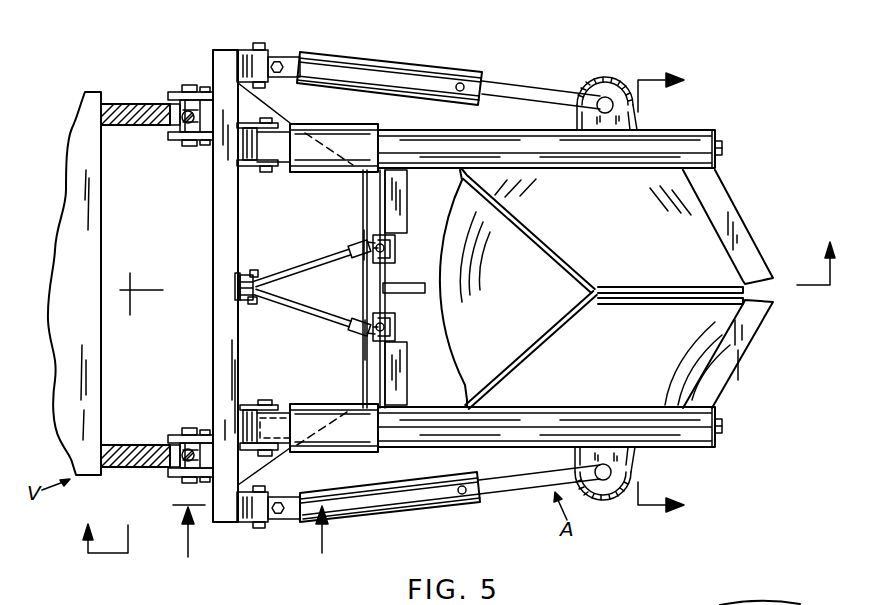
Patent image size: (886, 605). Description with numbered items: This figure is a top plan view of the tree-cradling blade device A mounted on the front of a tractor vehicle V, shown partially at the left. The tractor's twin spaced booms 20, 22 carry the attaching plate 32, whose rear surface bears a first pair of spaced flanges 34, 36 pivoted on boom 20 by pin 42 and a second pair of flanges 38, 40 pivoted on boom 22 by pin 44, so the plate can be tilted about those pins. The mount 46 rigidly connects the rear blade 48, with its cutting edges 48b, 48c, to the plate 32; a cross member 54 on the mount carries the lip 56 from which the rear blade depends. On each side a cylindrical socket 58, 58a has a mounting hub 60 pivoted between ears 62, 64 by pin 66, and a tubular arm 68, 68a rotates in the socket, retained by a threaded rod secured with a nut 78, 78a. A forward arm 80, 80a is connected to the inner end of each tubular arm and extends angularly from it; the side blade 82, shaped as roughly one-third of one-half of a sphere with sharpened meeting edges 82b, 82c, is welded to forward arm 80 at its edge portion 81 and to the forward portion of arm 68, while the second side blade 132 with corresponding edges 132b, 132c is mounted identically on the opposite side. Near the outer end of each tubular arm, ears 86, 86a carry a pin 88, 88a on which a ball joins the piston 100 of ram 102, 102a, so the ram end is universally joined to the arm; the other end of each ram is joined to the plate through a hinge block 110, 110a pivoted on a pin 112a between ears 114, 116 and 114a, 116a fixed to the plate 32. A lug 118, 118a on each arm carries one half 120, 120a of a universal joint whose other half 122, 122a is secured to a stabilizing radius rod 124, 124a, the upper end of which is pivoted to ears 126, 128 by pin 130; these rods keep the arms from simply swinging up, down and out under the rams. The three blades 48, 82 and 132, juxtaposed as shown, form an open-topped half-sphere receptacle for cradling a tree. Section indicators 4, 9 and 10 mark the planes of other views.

The boom 20 is at (140, 450).
The boom 22 is at (126, 103).
The attaching plate 32 is at (228, 218).
The flange 34 is at (178, 472).
The flange 36 is at (190, 436).
The flange 38 is at (178, 141).
The flange 40 is at (181, 92).
The pin 42 is at (170, 463).
The pin 44 is at (168, 126).
The mount 46 is at (310, 446).
The rear blade segment 48 is at (451, 256).
The cutting edge 48b is at (528, 345).
The cutting edge 48c is at (556, 270).
The cross member 54 is at (370, 290).
The lip 56 is at (432, 336).
The first cylindrical socket 58 is at (371, 441).
The cylindrical socket 58a is at (335, 131).
The mounting hub 60 is at (280, 412).
The ear 62 is at (258, 458).
The ear 64 is at (248, 405).
The pin 66 is at (282, 429).
The tubular arm 68 is at (465, 441).
The tubular arm 68a is at (530, 127).
The nut 78 is at (713, 426).
The nut 78a is at (721, 156).
The forward arm 80 is at (734, 355).
The forward arm 80a is at (740, 237).
The edge portion 81 is at (826, 603).
The first blade segment 82 is at (688, 380).
The meeting edge 82b is at (668, 298).
The meeting edge 82c is at (536, 351).
The ear 86 is at (625, 455).
The ear 86a is at (625, 123).
The pin 88 is at (603, 481).
The pin 88a is at (605, 97).
The piston 100 is at (521, 482).
The ram 102 is at (438, 506).
The ram 102a is at (373, 68).
The hinge block 110 is at (257, 425).
The hinge block 110a is at (266, 146).
The pin 112a is at (259, 43).
The ear 114 is at (266, 528).
The ear 114a is at (258, 88).
The ear 116 is at (270, 497).
The ear 116a is at (246, 50).
The lug 118 is at (401, 386).
The lug 118a is at (401, 211).
The universal joint half 120 is at (396, 331).
The universal joint half 120a is at (386, 260).
The universal joint half 122 is at (359, 324).
The universal joint half 122a is at (357, 246).
The stabilizing radius rod 124 is at (332, 311).
The stabilizing radius rod 124a is at (335, 258).
The ear 126 is at (254, 303).
The ear 128 is at (256, 275).
The pin 130 is at (248, 266).
The second blade segment 132 is at (694, 219).
The meeting edge 132b is at (660, 282).
The meeting edge 132c is at (534, 237).
The section line 4- 4 is at (440, 416).
The section line 9- 9 is at (661, 299).
The section line 10- 10 is at (255, 532).